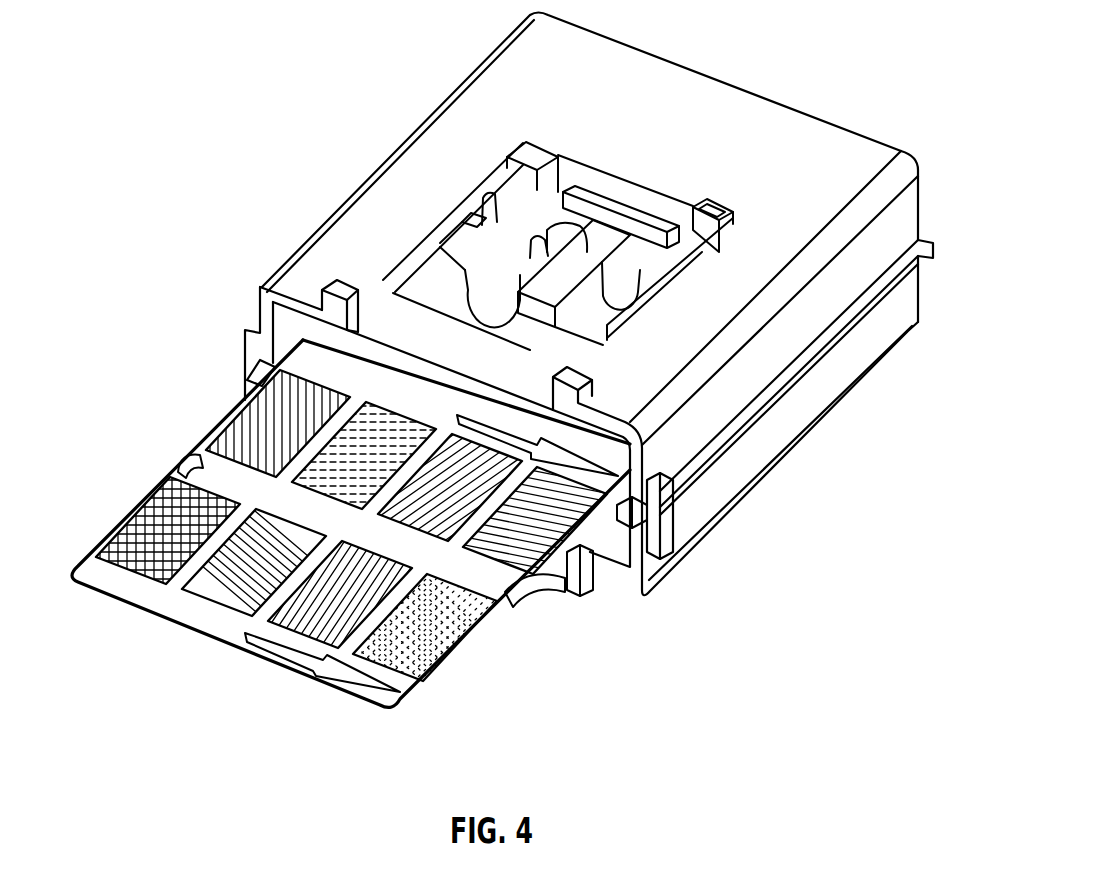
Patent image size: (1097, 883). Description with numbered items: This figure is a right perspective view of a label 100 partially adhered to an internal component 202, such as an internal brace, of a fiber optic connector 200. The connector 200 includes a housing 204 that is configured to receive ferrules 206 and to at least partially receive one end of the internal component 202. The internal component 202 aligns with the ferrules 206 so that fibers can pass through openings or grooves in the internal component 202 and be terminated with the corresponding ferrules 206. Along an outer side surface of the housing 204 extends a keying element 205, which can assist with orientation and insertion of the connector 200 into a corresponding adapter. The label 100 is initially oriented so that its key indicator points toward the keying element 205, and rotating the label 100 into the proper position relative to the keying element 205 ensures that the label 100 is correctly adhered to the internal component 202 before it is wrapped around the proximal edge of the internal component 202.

The label 100 is at (128, 497).
The fiber optic connector 200 is at (560, 304).
The internal component 202 is at (405, 337).
The housing 204 is at (526, 64).
The keying element 205 is at (743, 428).
The ferrules 206 is at (542, 226).